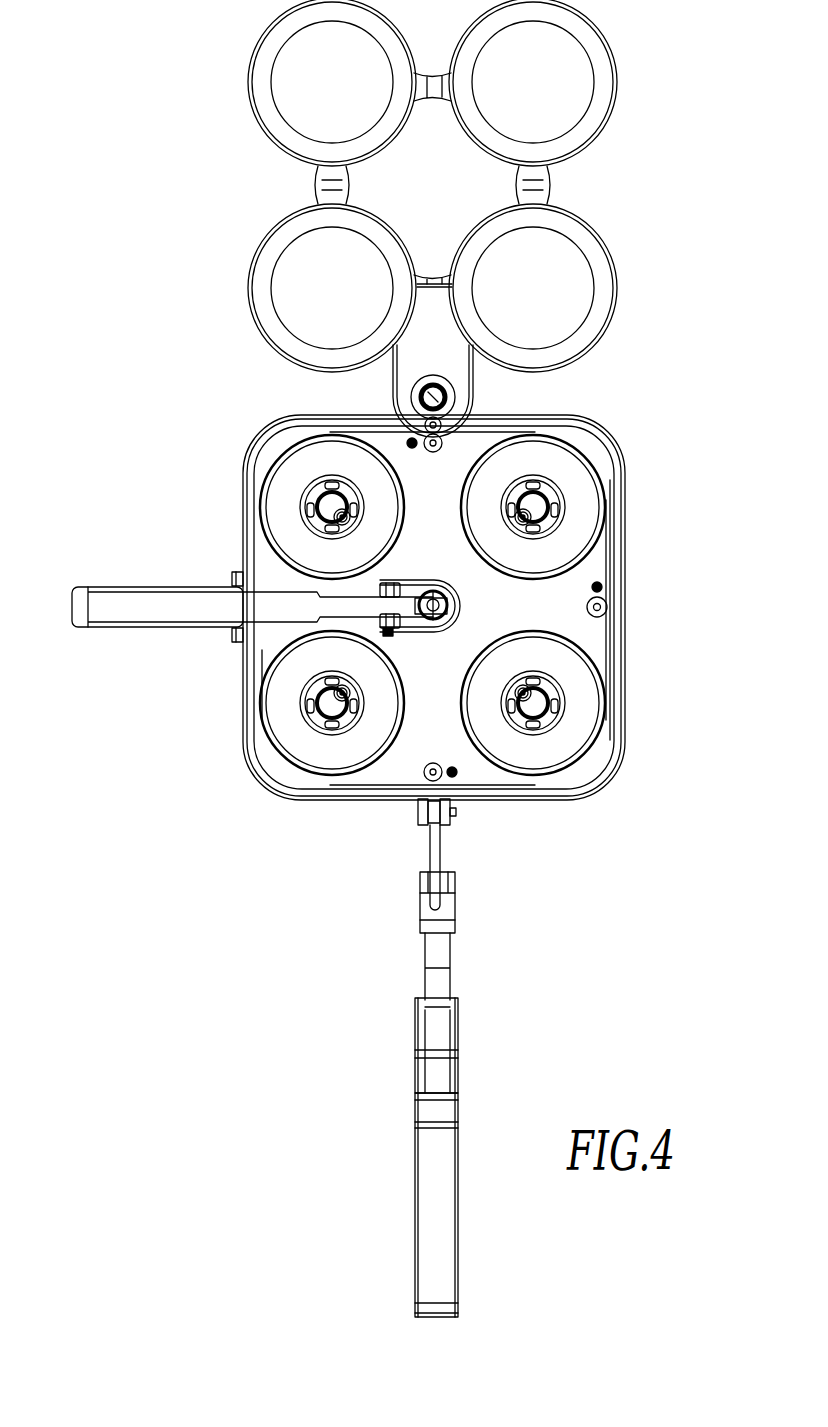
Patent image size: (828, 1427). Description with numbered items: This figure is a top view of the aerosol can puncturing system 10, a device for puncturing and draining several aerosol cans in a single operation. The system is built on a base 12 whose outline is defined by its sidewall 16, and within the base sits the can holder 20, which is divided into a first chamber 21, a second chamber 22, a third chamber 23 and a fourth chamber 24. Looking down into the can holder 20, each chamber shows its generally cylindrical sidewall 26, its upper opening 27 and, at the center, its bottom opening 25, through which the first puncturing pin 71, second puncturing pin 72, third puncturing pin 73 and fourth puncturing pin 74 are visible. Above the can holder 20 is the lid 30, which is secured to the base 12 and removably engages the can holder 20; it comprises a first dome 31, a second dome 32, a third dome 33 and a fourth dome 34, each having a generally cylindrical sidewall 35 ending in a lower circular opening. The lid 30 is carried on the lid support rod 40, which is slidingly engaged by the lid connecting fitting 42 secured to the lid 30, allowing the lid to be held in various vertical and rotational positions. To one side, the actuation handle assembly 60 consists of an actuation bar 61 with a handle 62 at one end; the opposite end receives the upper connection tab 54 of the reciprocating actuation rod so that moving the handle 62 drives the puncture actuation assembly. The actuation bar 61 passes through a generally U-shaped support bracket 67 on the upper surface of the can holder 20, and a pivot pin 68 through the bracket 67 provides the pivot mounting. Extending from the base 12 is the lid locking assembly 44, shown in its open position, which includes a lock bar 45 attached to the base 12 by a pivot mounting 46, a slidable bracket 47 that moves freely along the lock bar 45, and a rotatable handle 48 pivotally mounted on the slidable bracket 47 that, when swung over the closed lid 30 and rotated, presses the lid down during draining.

The aerosol can puncturing system 10 is at (173, 82).
The base 12 is at (598, 447).
The sidewall 16 is at (625, 537).
The can holder 20 is at (604, 585).
The first chamber 21 is at (314, 457).
The second chamber 22 is at (293, 750).
The third chamber 23 is at (560, 760).
The fourth chamber 24 is at (553, 447).
The bottom opening 25 is at (314, 500).
The cylindrical sidewall 26 is at (400, 482).
The upper opening 27 is at (512, 445).
The lid 30 is at (352, 177).
The first dome 31 is at (553, 99).
The second dome 32 is at (343, 99).
The third dome 33 is at (343, 290).
The fourth dome 34 is at (544, 299).
The cylindrical sidewall 35 is at (262, 42).
The lid support rod 40 is at (421, 391).
The lid connecting fitting 42 is at (424, 323).
The lid locking assembly 44 is at (452, 985).
The lock bar 45 is at (437, 850).
The pivot mounting 46 is at (430, 815).
The slidable bracket 47 is at (433, 947).
The rotatable handle 48 is at (427, 1165).
The upper connection tab 54 is at (457, 603).
The actuation handle assembly 60 is at (130, 615).
The actuation bar 61 is at (292, 604).
The handle 62 is at (162, 598).
The support bracket 67 is at (390, 583).
The pivot pin 68 is at (392, 634).
The first puncturing pin 71 is at (334, 498).
The second puncturing pin 72 is at (324, 728).
The third puncturing pin 73 is at (526, 686).
The fourth puncturing pin 74 is at (547, 532).